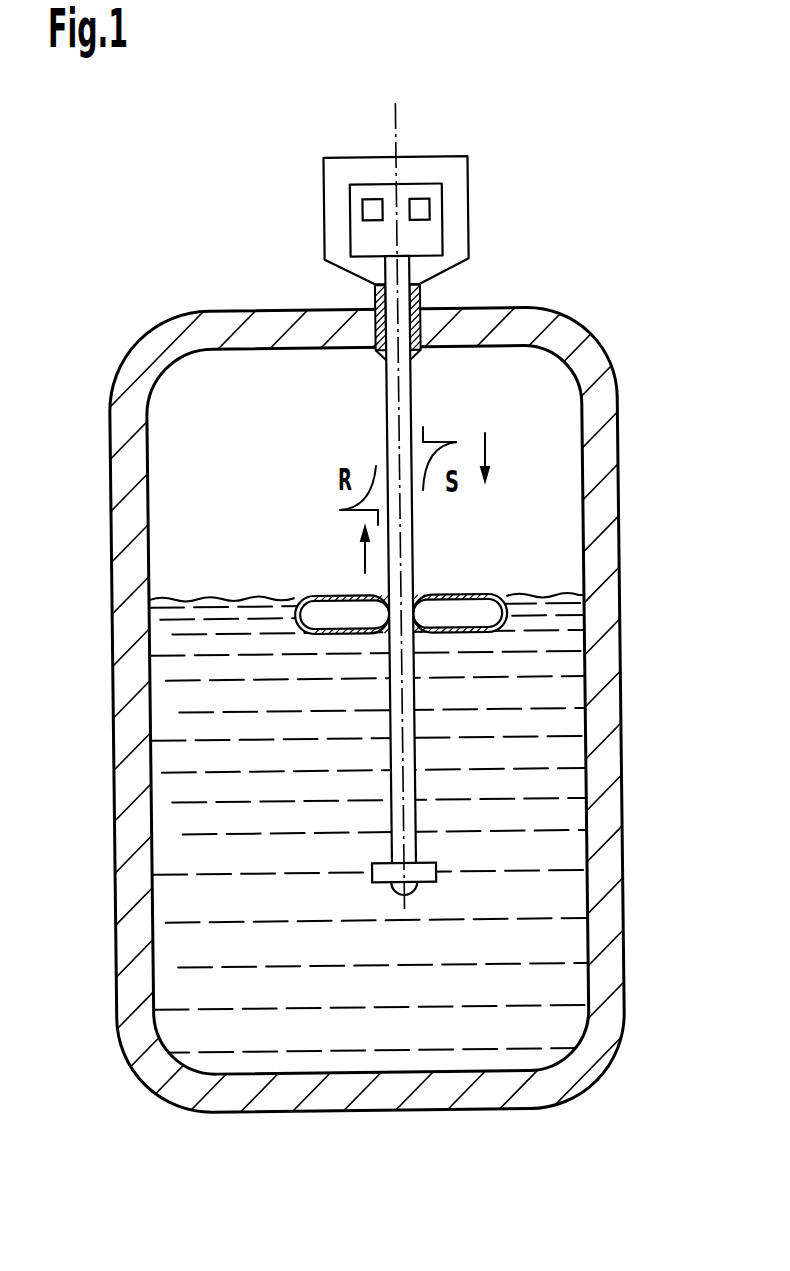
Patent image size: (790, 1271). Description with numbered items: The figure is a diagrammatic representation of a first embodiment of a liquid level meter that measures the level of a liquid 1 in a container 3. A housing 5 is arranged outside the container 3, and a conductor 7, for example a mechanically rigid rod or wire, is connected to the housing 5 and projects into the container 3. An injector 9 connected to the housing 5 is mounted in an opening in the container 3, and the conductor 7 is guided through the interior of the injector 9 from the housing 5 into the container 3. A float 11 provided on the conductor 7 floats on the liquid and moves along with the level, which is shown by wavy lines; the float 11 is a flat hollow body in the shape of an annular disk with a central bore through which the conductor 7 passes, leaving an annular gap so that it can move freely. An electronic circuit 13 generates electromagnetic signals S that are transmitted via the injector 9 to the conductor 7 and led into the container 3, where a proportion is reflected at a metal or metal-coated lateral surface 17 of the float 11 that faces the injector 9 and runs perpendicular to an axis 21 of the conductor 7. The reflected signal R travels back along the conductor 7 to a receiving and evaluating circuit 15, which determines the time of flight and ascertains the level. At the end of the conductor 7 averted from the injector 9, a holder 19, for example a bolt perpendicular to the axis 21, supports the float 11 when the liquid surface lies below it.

The liquid 1 is at (527, 893).
The container 3 is at (113, 662).
The housing 5 is at (324, 210).
The conductor 7 is at (413, 400).
The injector 9 is at (372, 328).
The float 11 is at (500, 632).
The electronic circuit 13 is at (424, 210).
The receiving and evaluating circuit 15 is at (370, 203).
The lateral surface 17 is at (325, 596).
The holder 19 is at (373, 873).
The axis 21 is at (399, 112).